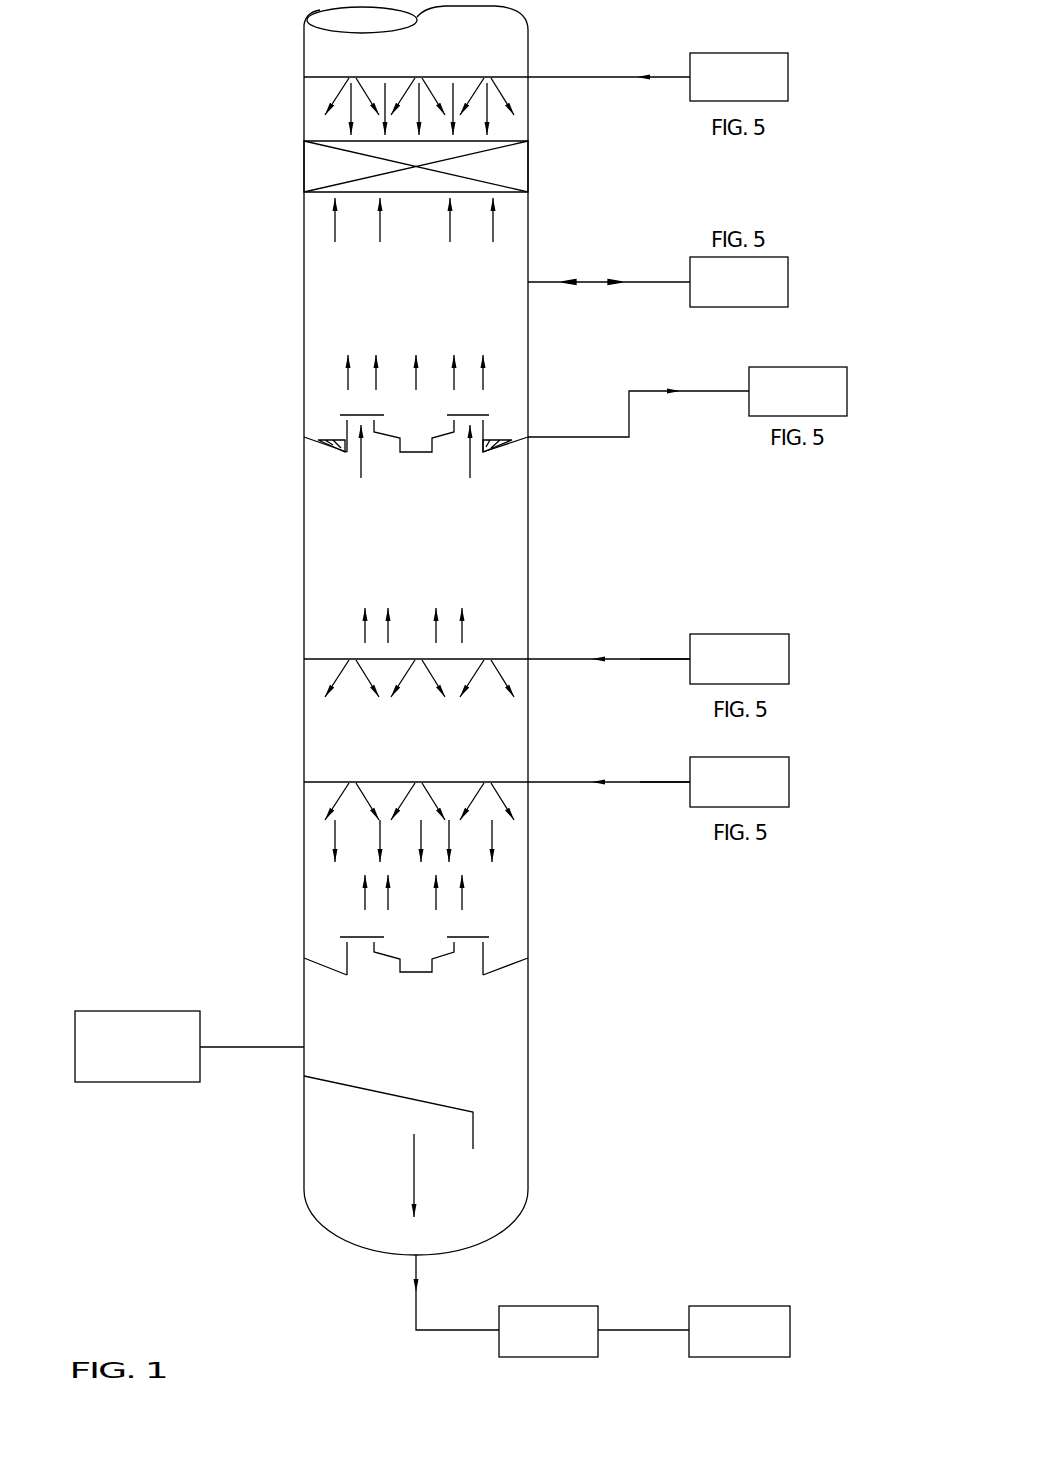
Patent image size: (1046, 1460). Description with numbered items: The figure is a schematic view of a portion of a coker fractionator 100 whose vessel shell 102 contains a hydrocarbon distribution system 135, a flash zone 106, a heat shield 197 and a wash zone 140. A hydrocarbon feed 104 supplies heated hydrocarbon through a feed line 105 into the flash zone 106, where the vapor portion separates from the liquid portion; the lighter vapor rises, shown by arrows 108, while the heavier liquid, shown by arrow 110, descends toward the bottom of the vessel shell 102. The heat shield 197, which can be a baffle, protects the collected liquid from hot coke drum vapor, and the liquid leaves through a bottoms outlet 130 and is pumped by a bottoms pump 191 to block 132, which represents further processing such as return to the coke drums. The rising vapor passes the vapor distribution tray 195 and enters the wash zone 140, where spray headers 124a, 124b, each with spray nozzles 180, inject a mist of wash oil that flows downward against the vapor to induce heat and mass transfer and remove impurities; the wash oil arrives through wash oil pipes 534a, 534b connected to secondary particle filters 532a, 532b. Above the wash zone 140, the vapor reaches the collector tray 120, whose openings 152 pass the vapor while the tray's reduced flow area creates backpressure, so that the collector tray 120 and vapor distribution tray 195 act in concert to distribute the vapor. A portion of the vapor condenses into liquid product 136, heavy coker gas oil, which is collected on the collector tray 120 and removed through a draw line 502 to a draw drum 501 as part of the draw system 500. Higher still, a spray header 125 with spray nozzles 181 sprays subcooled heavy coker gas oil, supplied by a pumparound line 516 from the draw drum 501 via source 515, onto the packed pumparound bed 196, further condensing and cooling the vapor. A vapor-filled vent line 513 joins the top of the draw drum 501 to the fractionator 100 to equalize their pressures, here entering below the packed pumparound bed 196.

The coker fractionator 100 is at (178, 322).
The vessel shell 102 is at (304, 583).
The hydrocarbon feed 104 is at (117, 1058).
The feed line 105 is at (252, 1048).
The flash zone 106 is at (394, 1025).
The arrows 108 is at (493, 235).
The arrow 110 is at (414, 1162).
The collector tray 120 is at (510, 410).
The spray header 124a is at (558, 662).
The spray header 124b is at (558, 785).
The spray header 125 is at (512, 77).
The bottoms outlet 130 is at (416, 1318).
The block 132 is at (720, 1343).
The hydrocarbon distribution system 135 is at (333, 740).
The liquid product 136 is at (498, 440).
The wash zone 140 is at (399, 747).
The openings 152 is at (415, 467).
The spray nozzles 180 is at (340, 664).
The spray nozzles 181 is at (330, 85).
The bottoms pump 191 is at (529, 1343).
The vapor distribution tray 195 is at (505, 933).
The packed pumparound bed 196 is at (304, 163).
The heat shield 197 is at (432, 1100).
The draw system 500 is at (793, 722).
The draw drum 501 is at (720, 294).
The draw line 502 is at (718, 393).
The vent line 513 is at (645, 282).
The reflux source 515 is at (720, 85).
The pumparound line 516 is at (590, 82).
The secondary particle filter 532a is at (712, 671).
The secondary particle filter 532b is at (712, 794).
The wash oil pipe 534a is at (658, 662).
The wash oil pipe 534b is at (658, 785).